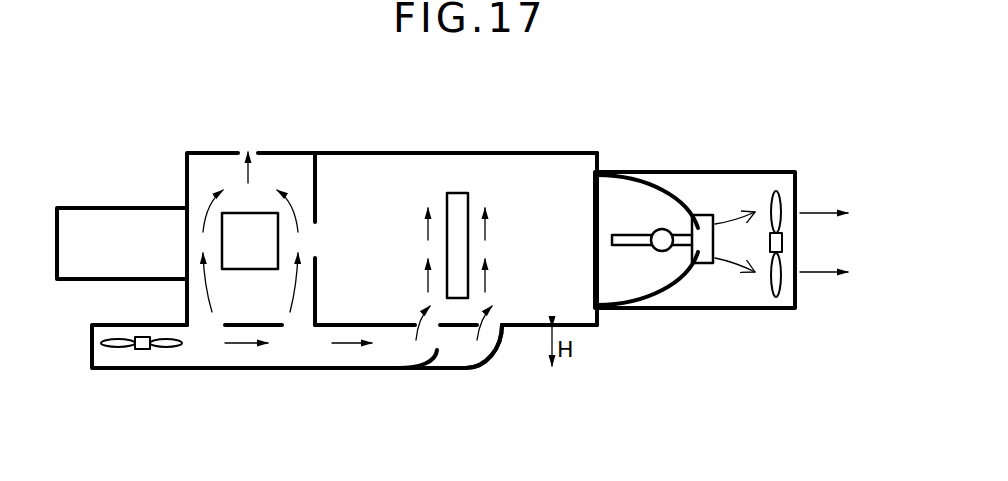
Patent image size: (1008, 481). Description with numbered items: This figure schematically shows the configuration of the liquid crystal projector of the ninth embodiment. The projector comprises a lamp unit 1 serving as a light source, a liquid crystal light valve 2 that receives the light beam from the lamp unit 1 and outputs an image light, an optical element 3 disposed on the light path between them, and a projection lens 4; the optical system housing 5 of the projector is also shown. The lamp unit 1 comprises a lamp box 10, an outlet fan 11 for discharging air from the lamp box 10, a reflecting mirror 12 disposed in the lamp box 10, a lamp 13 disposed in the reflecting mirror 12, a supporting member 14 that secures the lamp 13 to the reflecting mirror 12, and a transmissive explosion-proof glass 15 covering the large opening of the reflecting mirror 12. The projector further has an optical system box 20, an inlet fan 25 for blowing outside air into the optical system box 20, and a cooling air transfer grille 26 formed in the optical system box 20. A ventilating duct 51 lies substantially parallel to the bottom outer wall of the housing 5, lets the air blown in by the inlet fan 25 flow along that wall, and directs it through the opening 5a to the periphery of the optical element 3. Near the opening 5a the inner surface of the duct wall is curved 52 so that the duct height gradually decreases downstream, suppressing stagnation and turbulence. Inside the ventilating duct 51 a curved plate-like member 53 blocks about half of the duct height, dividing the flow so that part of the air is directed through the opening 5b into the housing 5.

The lamp unit 1 is at (707, 322).
The liquid crystal light valve 2 is at (288, 142).
The optical element 3 is at (457, 193).
The projection lens 4 is at (117, 225).
The optical system housing 5 is at (400, 153).
The opening 5a is at (470, 342).
The opening 5b is at (420, 327).
The lamp box 10 is at (767, 310).
The outlet fan 11 is at (775, 195).
The reflecting mirror 12 is at (652, 215).
The lamp 13 is at (637, 247).
The supporting member 14 is at (696, 215).
The transmissive explosion-proof glass 15 is at (593, 210).
The optical system box 20 is at (317, 207).
The inlet fan 25 is at (130, 369).
The cooling air transfer grille 26 is at (240, 155).
The ventilating duct 51 is at (283, 369).
The curved inner surface 52 is at (495, 352).
The plate-like member 53 is at (432, 360).